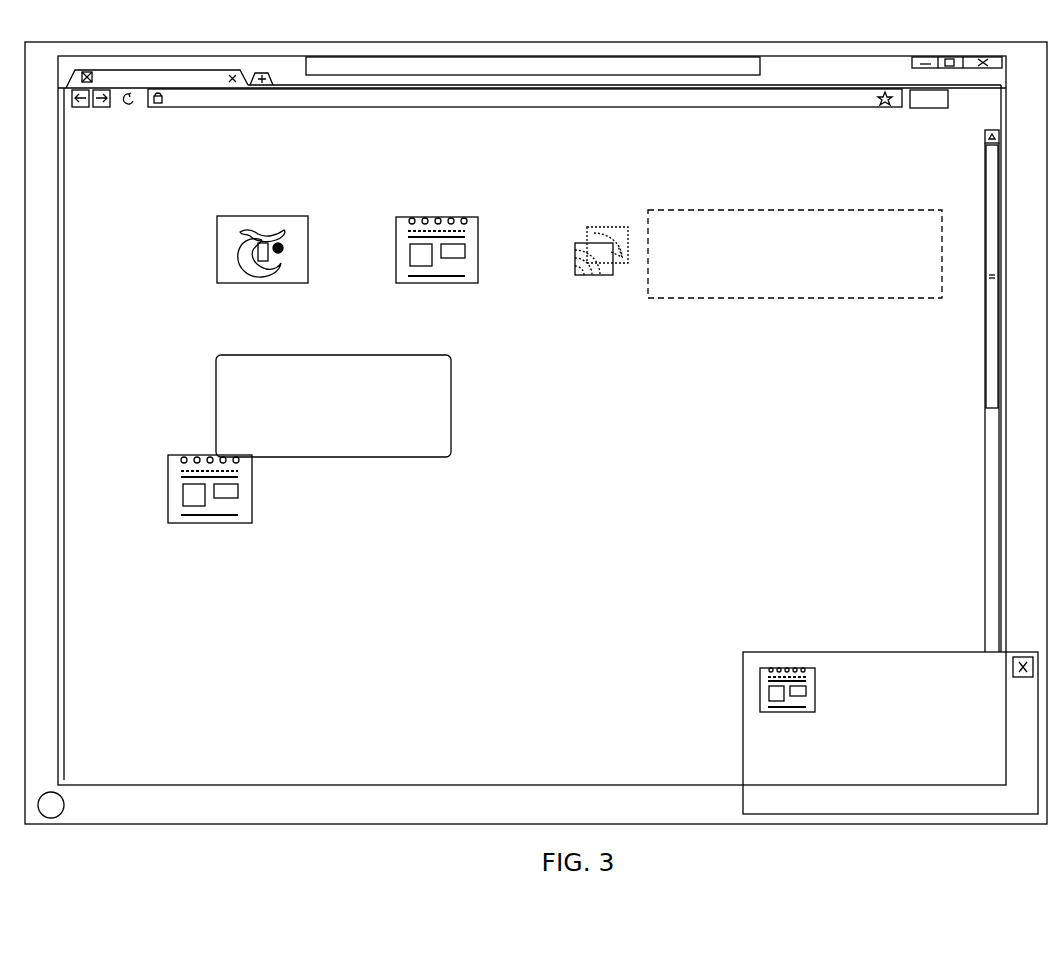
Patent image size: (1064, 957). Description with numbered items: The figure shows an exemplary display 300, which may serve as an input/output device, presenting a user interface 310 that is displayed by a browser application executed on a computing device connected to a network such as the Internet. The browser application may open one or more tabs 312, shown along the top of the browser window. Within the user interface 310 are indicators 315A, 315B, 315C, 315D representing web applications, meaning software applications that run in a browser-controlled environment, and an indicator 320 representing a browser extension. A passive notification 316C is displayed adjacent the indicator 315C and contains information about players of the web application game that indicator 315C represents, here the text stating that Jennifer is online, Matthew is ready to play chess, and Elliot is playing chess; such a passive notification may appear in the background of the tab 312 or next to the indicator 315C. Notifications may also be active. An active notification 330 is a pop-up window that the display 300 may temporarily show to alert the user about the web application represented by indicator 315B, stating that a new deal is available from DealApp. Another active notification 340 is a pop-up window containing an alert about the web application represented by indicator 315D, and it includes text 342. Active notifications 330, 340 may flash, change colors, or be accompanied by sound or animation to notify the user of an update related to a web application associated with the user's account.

The display 300 is at (25, 400).
The user interface 310 is at (58, 240).
The tab 312 is at (205, 75).
The indicator 315A is at (260, 216).
The indicator 315B is at (437, 216).
The indicator 315C is at (597, 227).
The indicator 315D is at (166, 455).
The passive notification 316C is at (740, 210).
The indicator 320 is at (931, 109).
The active notification 330 is at (923, 652).
The active notification 340 is at (333, 426).
The text 342 is at (358, 396).